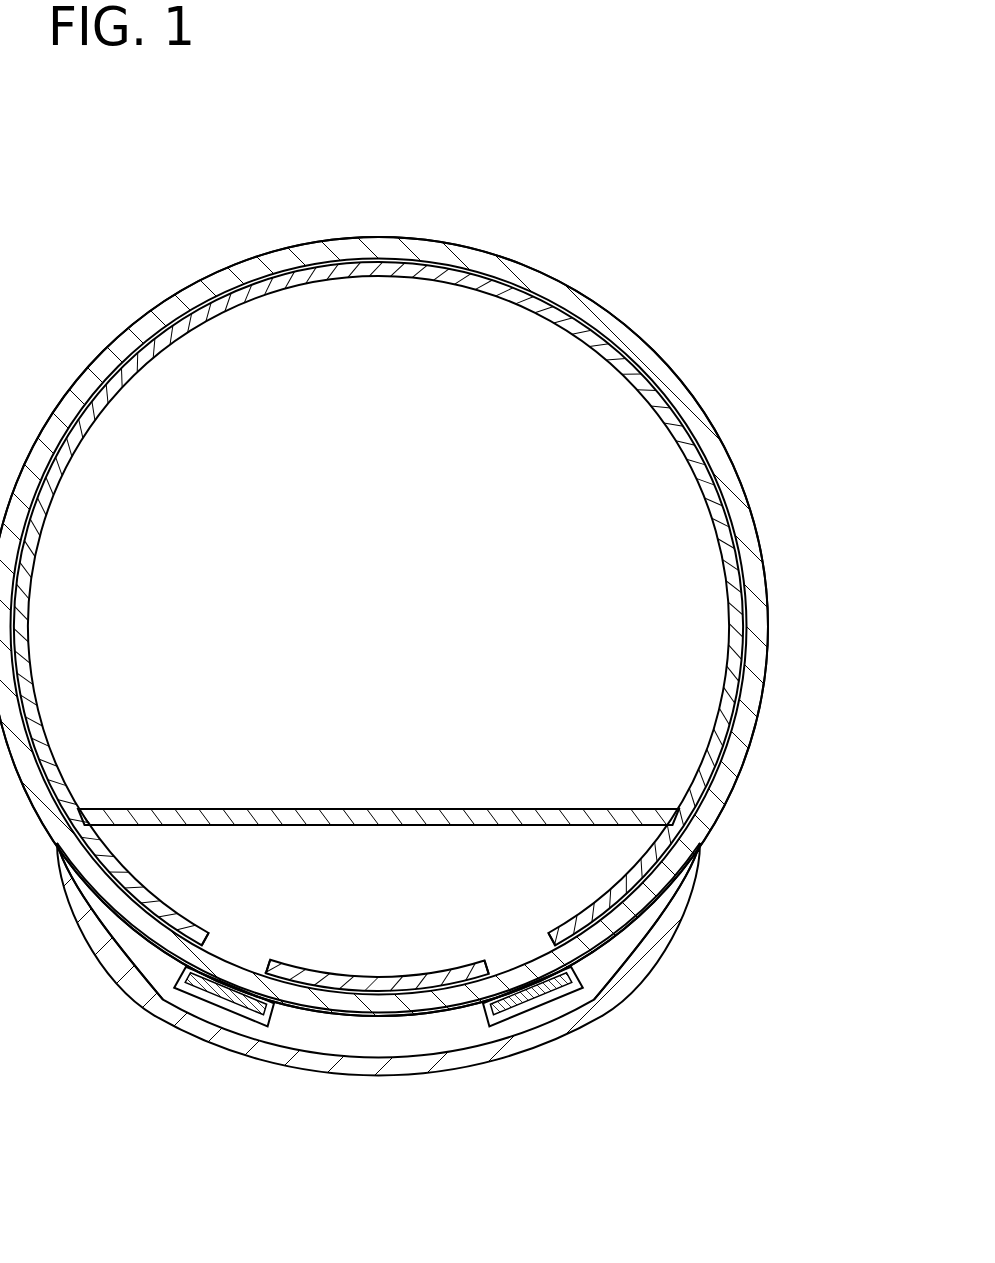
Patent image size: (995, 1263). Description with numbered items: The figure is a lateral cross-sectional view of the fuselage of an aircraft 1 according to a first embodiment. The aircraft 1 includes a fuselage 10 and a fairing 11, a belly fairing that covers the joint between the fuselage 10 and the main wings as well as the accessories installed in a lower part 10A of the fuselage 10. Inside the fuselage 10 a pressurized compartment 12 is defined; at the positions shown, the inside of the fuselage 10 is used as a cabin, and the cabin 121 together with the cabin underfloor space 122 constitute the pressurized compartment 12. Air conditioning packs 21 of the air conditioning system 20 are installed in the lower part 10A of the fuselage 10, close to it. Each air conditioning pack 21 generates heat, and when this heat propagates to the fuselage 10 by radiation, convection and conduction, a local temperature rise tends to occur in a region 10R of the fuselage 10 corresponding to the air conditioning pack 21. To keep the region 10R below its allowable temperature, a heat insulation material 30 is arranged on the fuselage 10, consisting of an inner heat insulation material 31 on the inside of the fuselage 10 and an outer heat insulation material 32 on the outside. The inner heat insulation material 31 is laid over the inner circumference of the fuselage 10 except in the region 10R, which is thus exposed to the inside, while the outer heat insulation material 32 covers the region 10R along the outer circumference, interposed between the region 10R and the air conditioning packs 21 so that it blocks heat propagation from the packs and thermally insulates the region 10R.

The aircraft 1 is at (688, 227).
The fuselage 10 is at (708, 417).
The lower part of the fuselage 10A is at (600, 948).
The region of the fuselage 10R is at (234, 949).
The fairing 11 is at (378, 1068).
The pressurized compartment 12 is at (392, 583).
The cabin 121 is at (329, 320).
The cabin underfloor space 122 is at (296, 832).
The air conditioning system 20 is at (176, 1022).
The air conditioning pack 21 is at (240, 1027).
The heat insulation material 30 is at (356, 1016).
The inner heat insulation material 31 is at (415, 975).
The outer heat insulation material 32 is at (214, 996).